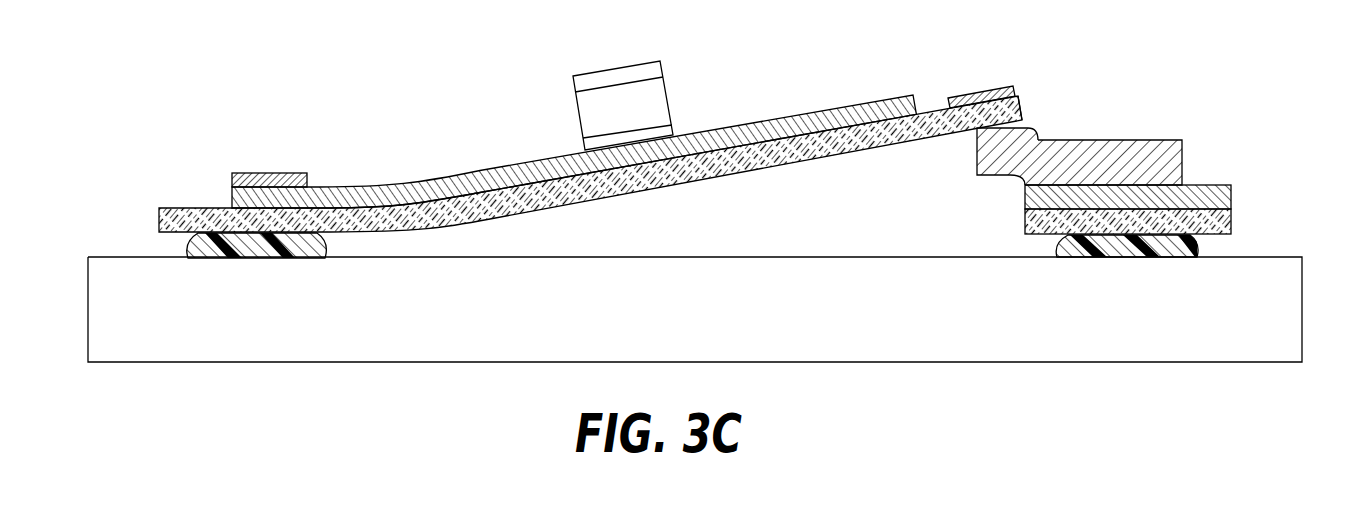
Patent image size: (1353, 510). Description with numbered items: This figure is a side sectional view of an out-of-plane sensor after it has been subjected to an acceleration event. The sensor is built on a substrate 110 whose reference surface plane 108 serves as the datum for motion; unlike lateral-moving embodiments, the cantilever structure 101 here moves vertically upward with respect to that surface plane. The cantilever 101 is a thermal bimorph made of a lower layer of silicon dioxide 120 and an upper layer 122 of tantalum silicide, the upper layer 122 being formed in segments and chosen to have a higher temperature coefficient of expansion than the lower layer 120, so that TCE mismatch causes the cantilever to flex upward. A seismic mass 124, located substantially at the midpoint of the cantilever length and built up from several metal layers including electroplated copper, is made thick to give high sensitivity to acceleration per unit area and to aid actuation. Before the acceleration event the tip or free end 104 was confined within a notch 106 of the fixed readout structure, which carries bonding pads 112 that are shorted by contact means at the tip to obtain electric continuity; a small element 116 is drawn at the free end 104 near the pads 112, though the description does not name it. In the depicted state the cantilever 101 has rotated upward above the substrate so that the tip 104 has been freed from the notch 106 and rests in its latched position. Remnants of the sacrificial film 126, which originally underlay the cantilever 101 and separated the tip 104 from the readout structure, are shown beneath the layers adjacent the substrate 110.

The cantilever structure 101 is at (447, 158).
The tip or free end 104 is at (969, 63).
The notch 106 is at (1015, 215).
The reference surface plane 108 is at (115, 257).
The substrate 110 is at (695, 325).
The bonding pads 112 is at (1147, 140).
The contact tip 116 is at (995, 86).
The lower layer of silicon dioxide 120 is at (172, 208).
The upper layer of tantalum silicide 122 is at (232, 198).
The seismic mass 124 is at (664, 68).
The sacrificial film 126 is at (250, 250).